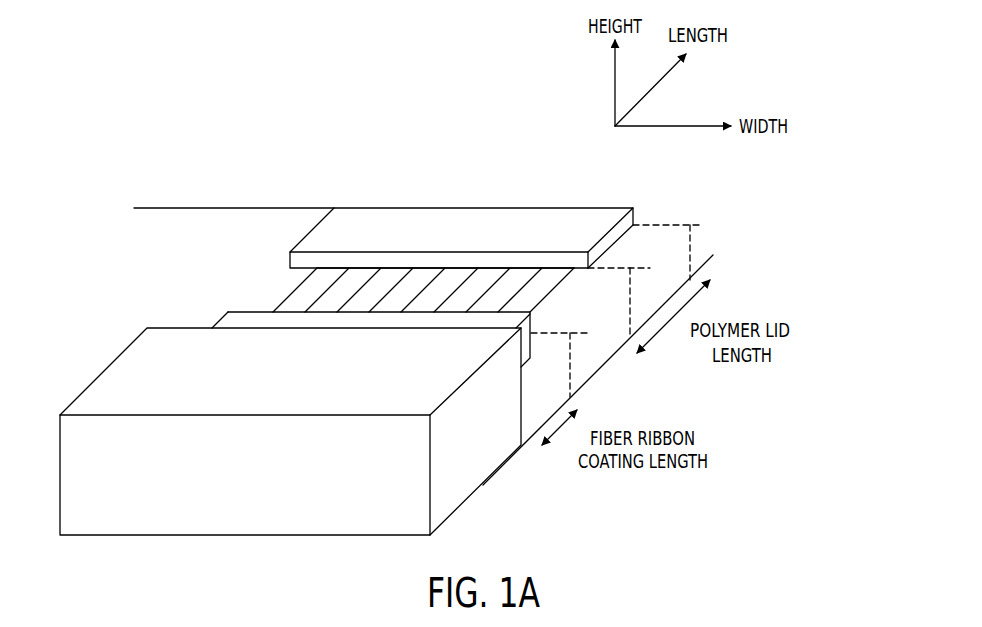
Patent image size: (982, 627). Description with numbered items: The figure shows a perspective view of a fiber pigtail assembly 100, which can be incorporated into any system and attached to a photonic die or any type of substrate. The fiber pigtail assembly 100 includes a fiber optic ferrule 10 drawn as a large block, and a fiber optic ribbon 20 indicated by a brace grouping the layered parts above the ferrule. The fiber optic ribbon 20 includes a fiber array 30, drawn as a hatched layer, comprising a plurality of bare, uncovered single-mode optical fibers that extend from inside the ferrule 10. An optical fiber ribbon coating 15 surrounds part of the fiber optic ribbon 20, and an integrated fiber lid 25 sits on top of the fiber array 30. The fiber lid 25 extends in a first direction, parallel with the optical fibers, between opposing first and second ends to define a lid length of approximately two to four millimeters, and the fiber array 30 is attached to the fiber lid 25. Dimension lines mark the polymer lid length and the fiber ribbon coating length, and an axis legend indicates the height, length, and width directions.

The fiber pigtail assembly 100 is at (174, 179).
The fiber optic ferrule 10 is at (68, 478).
The optical fiber ribbon coating 15 is at (224, 316).
The fiber optic ribbon 20 is at (134, 208).
The integrated fiber lid 25 is at (313, 247).
The fiber array 30 is at (300, 292).